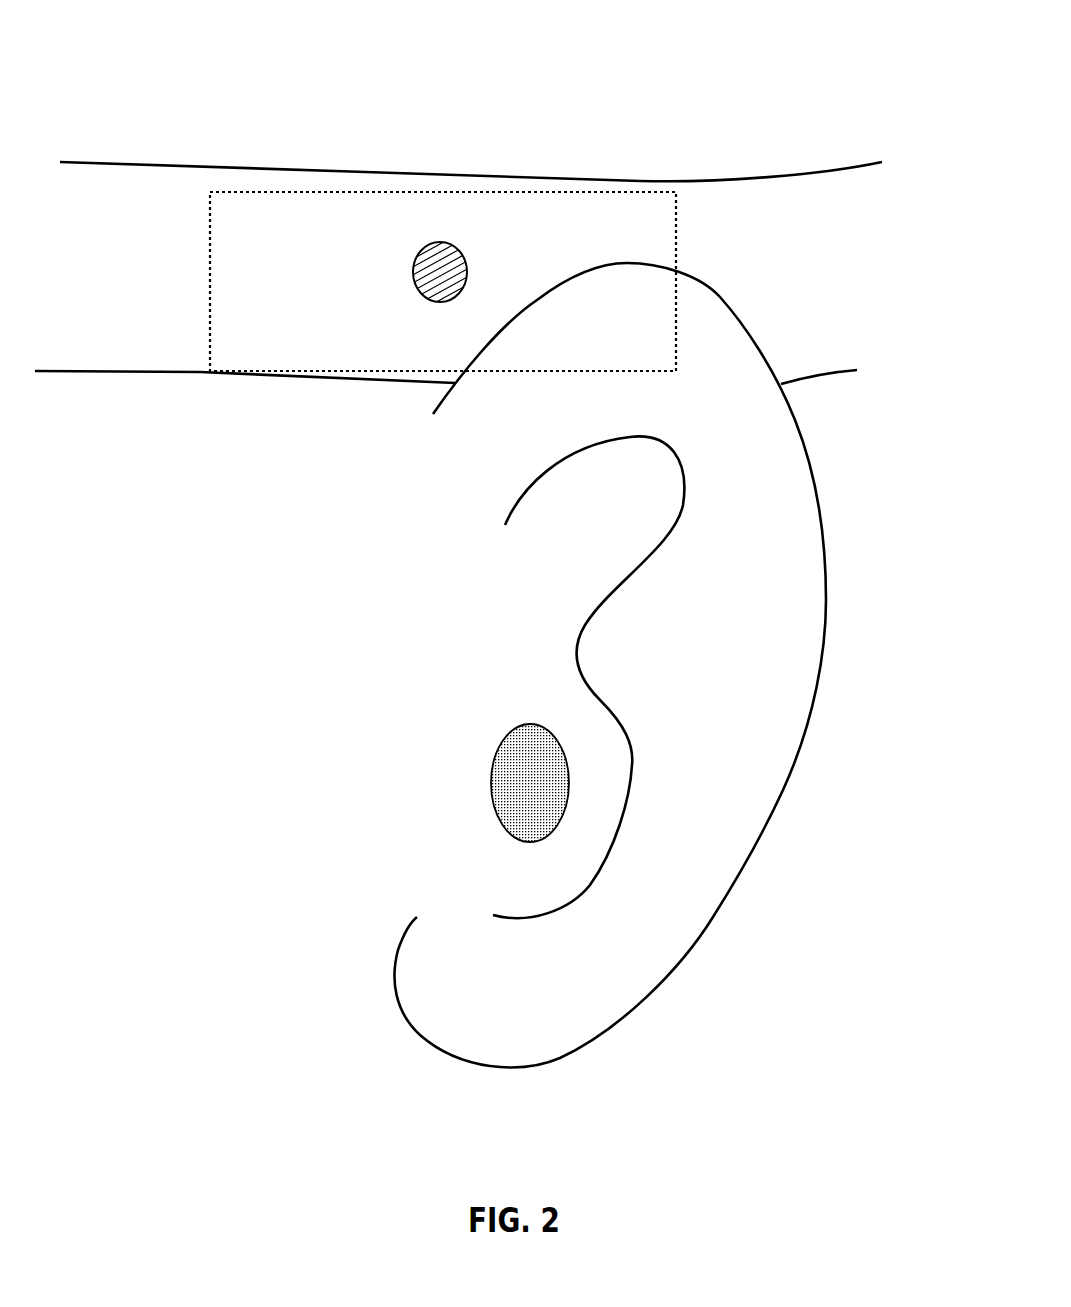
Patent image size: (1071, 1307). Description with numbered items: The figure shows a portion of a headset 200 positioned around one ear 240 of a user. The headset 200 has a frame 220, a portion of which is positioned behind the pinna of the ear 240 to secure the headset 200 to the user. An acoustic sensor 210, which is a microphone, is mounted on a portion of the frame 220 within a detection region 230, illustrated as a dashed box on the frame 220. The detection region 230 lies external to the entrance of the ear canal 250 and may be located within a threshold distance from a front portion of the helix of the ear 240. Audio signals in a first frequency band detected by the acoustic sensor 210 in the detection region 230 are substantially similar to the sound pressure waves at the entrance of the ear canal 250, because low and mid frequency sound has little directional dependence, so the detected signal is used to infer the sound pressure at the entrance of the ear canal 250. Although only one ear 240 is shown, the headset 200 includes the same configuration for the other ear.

The headset 200 is at (162, 31).
The acoustic sensor 210 is at (447, 243).
The frame 220 is at (104, 341).
The detection region 230 is at (557, 192).
The ear 240 is at (740, 497).
The entrance of the ear canal 250 is at (495, 752).